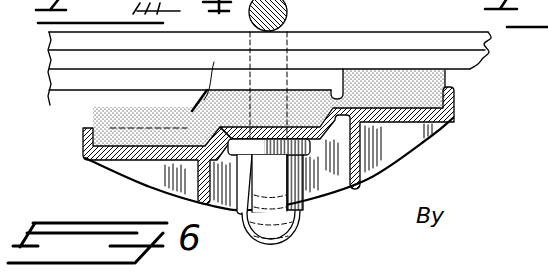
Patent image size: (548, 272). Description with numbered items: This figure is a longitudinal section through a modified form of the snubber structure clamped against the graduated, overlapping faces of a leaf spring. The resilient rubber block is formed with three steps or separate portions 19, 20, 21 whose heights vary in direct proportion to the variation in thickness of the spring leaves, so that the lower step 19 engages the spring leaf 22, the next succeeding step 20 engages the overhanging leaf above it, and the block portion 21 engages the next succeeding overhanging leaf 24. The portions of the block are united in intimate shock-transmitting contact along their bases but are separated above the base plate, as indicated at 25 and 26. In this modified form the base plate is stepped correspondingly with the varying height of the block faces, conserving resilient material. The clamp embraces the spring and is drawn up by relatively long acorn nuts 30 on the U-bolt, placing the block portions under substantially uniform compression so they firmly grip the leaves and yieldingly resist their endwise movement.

The lower step of resilient block 19 is at (83, 149).
The intermediate step of resilient block 20 is at (299, 88).
The upper block portion 21 is at (454, 103).
The spring leaf 22 is at (67, 93).
The overhanging spring leaf 24 is at (450, 57).
The separation between block portions 25 is at (199, 112).
The separation between block portions 26 is at (349, 90).
The acorn nut 30 is at (273, 188).